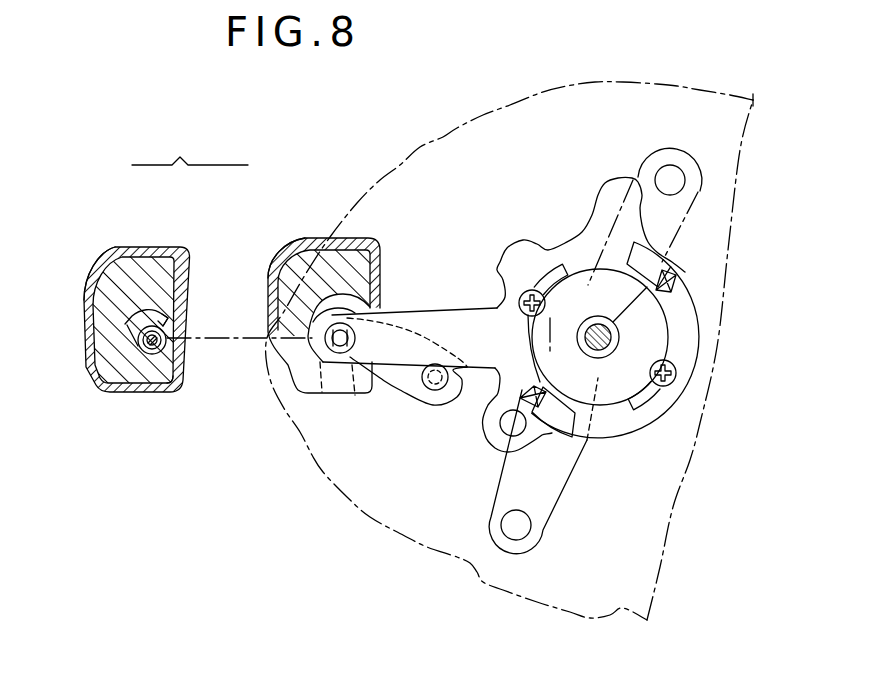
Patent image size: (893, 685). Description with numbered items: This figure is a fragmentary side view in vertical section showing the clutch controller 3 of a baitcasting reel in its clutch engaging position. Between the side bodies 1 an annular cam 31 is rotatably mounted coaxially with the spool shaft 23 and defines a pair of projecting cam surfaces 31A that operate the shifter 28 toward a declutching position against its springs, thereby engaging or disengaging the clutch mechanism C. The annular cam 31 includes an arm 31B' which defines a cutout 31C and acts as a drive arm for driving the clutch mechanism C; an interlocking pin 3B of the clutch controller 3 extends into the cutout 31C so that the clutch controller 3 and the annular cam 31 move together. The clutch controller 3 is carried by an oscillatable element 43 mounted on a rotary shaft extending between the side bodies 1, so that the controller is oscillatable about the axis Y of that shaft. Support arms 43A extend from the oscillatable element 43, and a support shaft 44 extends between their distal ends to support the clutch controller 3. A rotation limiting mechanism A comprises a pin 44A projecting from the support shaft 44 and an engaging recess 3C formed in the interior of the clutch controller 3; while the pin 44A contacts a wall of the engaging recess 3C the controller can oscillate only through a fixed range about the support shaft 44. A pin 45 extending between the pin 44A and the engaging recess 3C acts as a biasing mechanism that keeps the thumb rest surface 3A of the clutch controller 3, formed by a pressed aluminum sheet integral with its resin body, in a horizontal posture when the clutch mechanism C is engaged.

The side body 1 is at (453, 128).
The clutch controller 3 is at (92, 275).
The thumb rest surface 3A is at (120, 247).
The interlocking pin 3B is at (338, 342).
The engaging recess 3C is at (138, 315).
The rotation limiting mechanism A is at (190, 144).
The support shaft 44 is at (153, 352).
The pin 44A is at (165, 313).
The pin 45 is at (180, 373).
The annular cam 31 is at (550, 250).
The cam surface 31A is at (527, 390).
The arm 31B' is at (410, 284).
The cutout 31C is at (338, 340).
The spool shaft 23 is at (610, 353).
The shifter 28 is at (560, 507).
The oscillatable element 43 is at (433, 405).
The support arm 43A is at (400, 392).
The axis Y is at (462, 404).
The clutch mechanism C is at (632, 175).